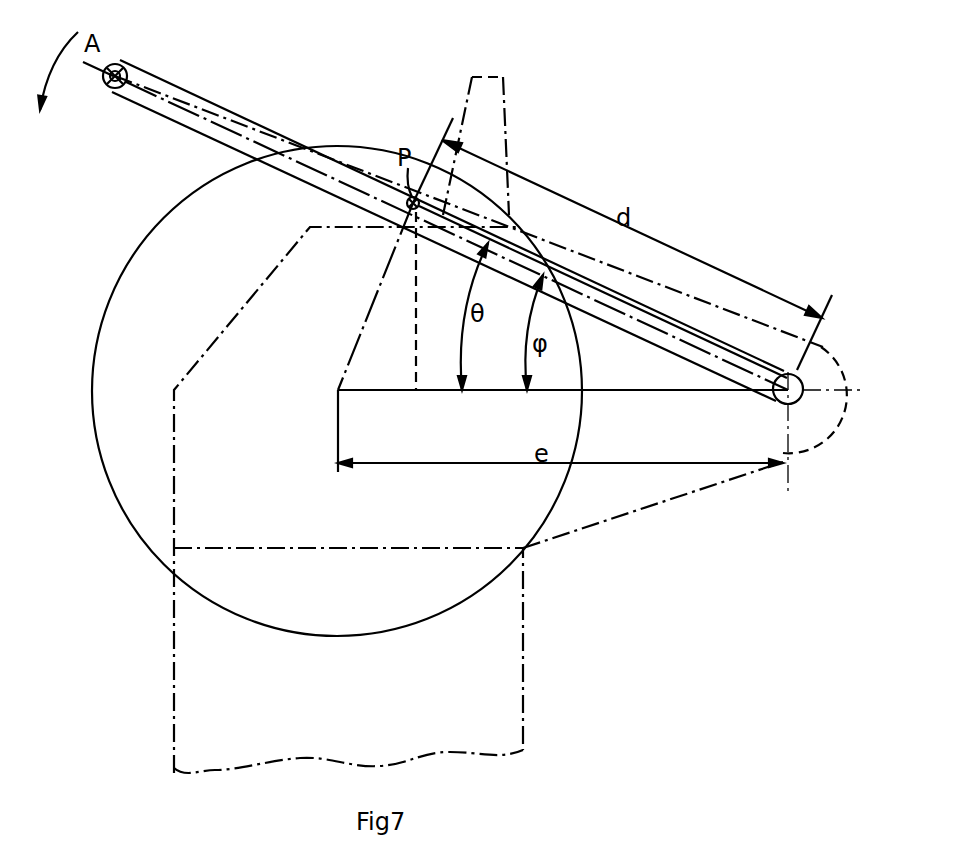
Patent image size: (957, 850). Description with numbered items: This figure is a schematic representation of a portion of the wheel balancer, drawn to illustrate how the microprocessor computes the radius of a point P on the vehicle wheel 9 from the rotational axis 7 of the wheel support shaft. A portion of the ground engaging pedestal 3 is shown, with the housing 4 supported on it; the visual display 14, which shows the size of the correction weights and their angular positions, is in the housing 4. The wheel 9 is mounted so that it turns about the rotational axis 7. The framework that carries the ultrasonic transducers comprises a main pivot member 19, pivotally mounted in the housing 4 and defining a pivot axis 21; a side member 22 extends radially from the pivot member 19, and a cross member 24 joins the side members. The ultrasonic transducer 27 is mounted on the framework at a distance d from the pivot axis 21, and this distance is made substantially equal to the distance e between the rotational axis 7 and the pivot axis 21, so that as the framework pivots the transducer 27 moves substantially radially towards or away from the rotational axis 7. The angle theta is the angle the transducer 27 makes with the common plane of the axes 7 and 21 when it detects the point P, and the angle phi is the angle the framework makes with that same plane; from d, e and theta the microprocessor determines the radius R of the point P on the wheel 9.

The pedestal 3 is at (524, 672).
The housing 4 is at (630, 513).
The rotational axis 7 is at (338, 392).
The vehicle wheel 9 is at (131, 519).
The visual display 14 is at (466, 100).
The main pivot member 19 is at (833, 432).
The pivot axis 21 is at (795, 377).
The side member 22 is at (200, 100).
The cross member 24 is at (128, 69).
The ultrasonic transducer 27 is at (398, 228).